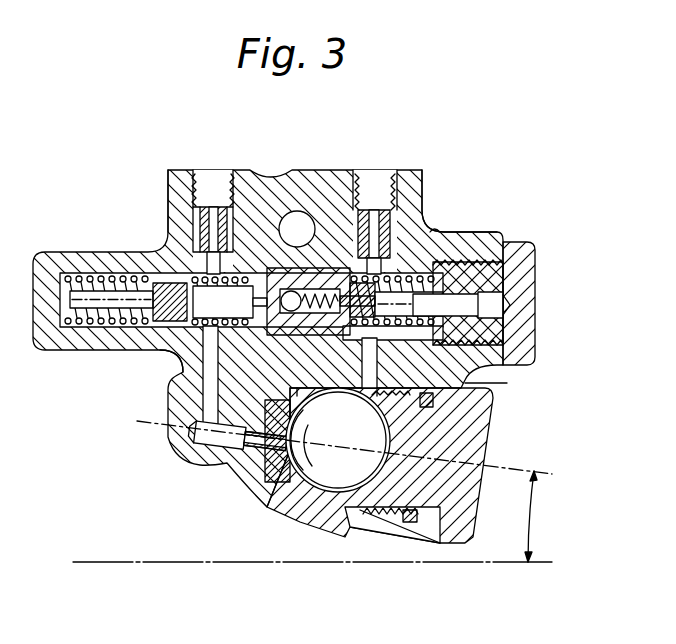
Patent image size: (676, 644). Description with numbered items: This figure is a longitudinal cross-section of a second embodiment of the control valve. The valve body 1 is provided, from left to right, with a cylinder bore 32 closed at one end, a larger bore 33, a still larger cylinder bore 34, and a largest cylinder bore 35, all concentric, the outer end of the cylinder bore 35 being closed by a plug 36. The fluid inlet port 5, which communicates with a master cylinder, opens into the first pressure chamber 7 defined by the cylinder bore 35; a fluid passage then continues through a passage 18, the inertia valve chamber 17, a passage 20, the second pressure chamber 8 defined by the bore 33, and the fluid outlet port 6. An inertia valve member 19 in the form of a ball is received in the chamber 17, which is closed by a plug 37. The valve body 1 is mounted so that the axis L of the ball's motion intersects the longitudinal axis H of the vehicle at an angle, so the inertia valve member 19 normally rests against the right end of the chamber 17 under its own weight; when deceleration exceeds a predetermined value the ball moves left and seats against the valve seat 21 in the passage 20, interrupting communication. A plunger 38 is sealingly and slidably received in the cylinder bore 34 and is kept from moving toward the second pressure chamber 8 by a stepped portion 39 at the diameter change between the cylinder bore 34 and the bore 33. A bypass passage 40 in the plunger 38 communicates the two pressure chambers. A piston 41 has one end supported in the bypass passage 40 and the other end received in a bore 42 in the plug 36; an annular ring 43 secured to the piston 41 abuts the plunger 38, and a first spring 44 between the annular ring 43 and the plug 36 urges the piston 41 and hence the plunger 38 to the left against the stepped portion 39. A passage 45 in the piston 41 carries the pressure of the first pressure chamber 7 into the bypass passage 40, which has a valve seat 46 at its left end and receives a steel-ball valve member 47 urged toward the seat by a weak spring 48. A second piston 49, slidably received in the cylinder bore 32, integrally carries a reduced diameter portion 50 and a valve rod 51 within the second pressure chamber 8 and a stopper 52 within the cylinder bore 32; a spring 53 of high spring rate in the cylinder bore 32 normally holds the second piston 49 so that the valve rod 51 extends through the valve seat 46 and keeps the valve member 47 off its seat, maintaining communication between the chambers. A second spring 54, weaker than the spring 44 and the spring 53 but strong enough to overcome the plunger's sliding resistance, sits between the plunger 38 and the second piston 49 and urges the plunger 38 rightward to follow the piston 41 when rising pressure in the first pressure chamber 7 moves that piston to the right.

The valve body 1 is at (168, 455).
The fluid inlet port 5 is at (398, 272).
The fluid outlet port 6 is at (212, 198).
The first pressure chamber 7 is at (426, 195).
The second pressure chamber 8 is at (168, 200).
The inertia valve chamber 17 is at (290, 500).
The passage 18 is at (495, 384).
The inertia valve member 19 is at (338, 472).
The passage 20 is at (220, 437).
The valve seat 21 is at (268, 484).
The cylinder bore 32 is at (100, 318).
The bore 33 is at (250, 287).
The cylinder bore 34 is at (335, 336).
The cylinder bore 35 is at (410, 265).
The plug 36 is at (490, 278).
The plug 37 is at (380, 497).
The plunger 38 is at (252, 337).
The stepped portion 39 is at (180, 383).
The bypass passage 40 is at (332, 266).
The piston 41 is at (480, 280).
The bore 42 is at (531, 243).
The annular ring 43 is at (372, 287).
The spring 44 is at (425, 205).
The passage 45 is at (375, 195).
The valve seat 46 is at (292, 211).
The valve member 47 is at (313, 290).
The weak spring 48 is at (344, 287).
The second piston 49 is at (162, 352).
The reduced diameter portion 50 is at (196, 270).
The valve rod 51 is at (265, 287).
The stopper 52 is at (113, 297).
The spring 53 is at (67, 297).
The spring 54 is at (223, 297).
The axis L is at (520, 469).
The longitudinal axis H is at (500, 563).